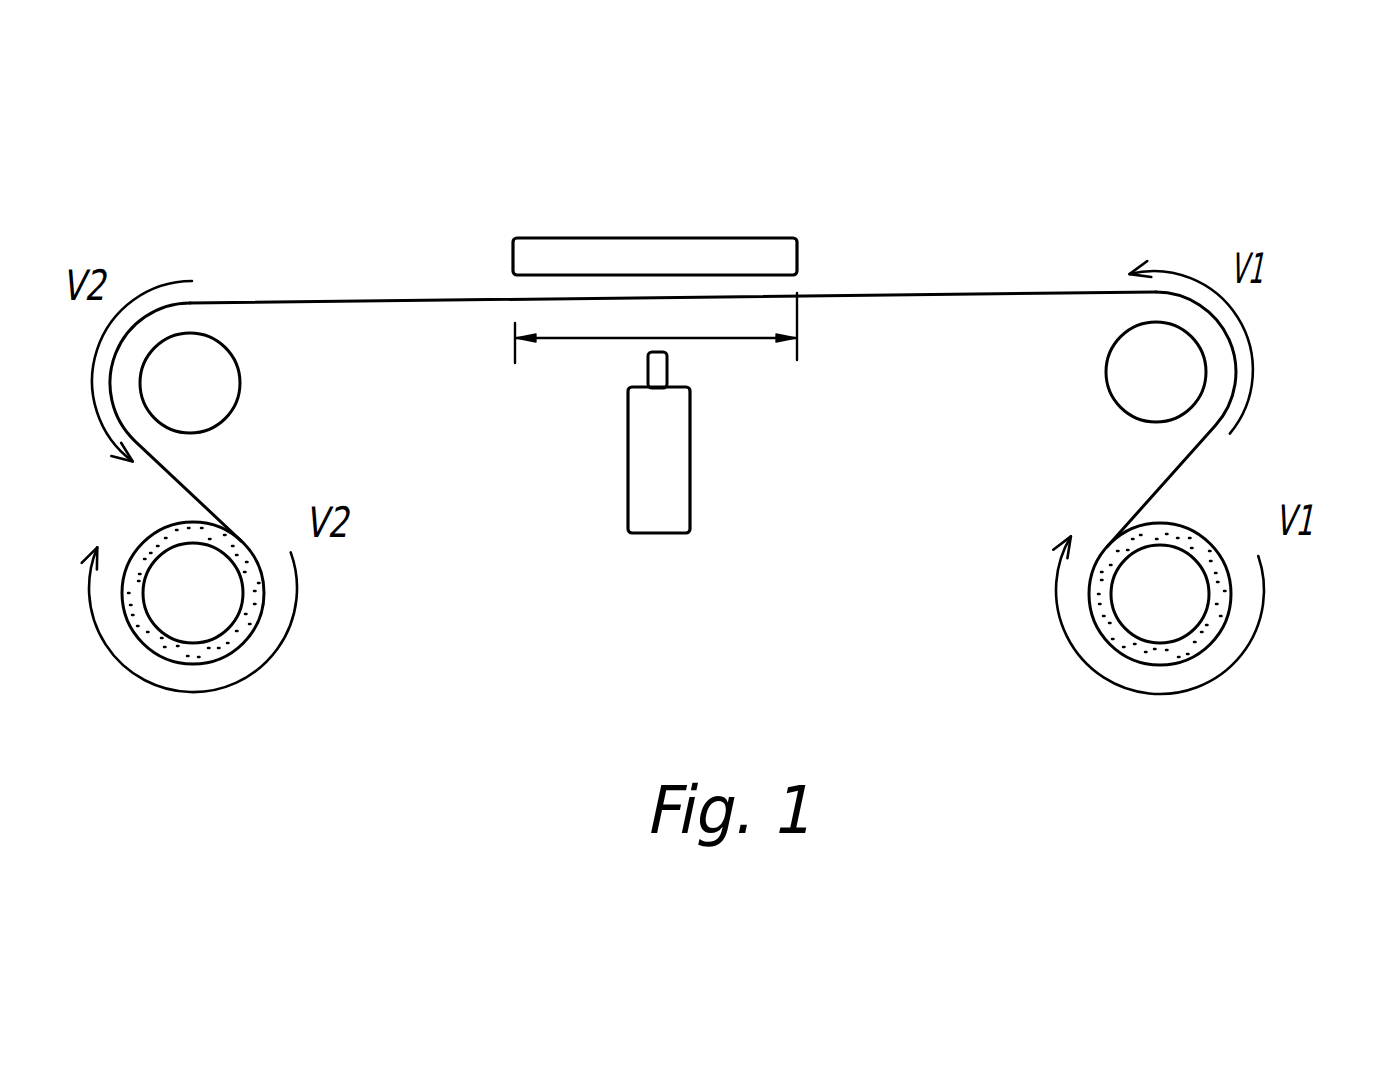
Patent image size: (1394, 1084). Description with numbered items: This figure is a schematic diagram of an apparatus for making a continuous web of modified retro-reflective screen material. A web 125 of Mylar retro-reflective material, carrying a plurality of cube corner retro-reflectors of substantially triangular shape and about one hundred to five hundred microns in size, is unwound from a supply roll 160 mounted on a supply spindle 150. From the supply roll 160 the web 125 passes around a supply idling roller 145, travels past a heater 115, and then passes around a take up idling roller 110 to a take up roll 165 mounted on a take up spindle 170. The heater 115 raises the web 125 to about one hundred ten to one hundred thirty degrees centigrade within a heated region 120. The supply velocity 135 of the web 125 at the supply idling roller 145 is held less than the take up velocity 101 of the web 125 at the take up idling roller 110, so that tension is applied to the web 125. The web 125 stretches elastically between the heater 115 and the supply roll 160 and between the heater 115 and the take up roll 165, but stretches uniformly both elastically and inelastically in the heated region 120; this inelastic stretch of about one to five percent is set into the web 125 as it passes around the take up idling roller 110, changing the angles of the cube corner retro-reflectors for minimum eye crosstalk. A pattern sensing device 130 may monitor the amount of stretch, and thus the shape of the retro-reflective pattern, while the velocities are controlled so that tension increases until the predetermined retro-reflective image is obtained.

The take up velocity V2 101 is at (105, 262).
The take up idling roller 110 is at (212, 362).
The heater 115 is at (752, 248).
The heated region 120 is at (570, 343).
The web 125 is at (958, 292).
The pattern sensing device 130 is at (690, 462).
The supply velocity V1 135 is at (1278, 250).
The supply idling roller 145 is at (1115, 364).
The supply spindle 150 is at (1180, 602).
The supply roll 160 is at (1220, 640).
The take up roll 165 is at (263, 587).
The take up spindle 170 is at (205, 612).